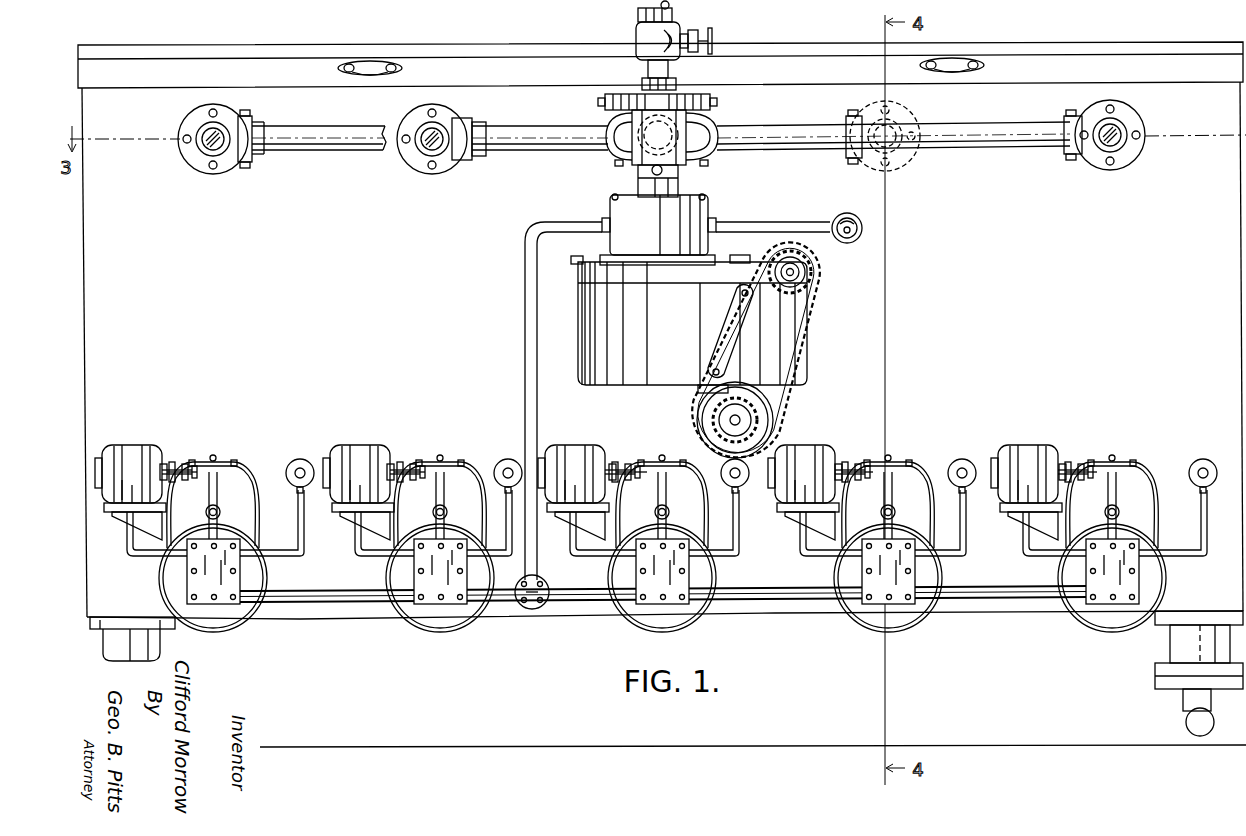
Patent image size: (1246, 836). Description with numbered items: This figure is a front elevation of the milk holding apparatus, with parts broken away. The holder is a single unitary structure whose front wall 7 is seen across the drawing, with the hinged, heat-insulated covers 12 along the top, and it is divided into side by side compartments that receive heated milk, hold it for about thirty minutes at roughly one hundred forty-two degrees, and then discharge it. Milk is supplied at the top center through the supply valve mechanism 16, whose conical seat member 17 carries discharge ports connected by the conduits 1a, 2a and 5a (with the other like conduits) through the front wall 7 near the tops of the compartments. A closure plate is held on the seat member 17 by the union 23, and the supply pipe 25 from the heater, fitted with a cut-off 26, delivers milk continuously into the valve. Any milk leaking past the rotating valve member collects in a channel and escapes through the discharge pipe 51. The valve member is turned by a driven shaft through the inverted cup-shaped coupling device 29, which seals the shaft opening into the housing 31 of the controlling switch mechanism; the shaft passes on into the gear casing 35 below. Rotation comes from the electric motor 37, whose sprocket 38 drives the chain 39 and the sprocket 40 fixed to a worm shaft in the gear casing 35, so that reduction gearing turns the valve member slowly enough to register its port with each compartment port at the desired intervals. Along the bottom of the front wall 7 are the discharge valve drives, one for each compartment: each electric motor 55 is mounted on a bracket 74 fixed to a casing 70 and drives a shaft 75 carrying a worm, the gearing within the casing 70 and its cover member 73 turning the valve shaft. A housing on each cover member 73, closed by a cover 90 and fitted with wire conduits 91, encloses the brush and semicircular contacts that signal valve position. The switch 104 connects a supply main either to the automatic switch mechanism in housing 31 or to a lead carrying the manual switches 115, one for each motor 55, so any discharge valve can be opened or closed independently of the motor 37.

The conduit 1a is at (290, 150).
The conduit 2a is at (497, 126).
The conduit 5a is at (968, 143).
The front wall 7 is at (766, 610).
The cover 12 is at (783, 78).
The valve mechanism 16 is at (618, 153).
The seat member 17 is at (700, 158).
The union 23 is at (605, 100).
The supply pipe 25 is at (636, 10).
The cut-off 26 is at (690, 32).
The coupling device 29 is at (647, 190).
The housing 31 is at (658, 230).
The gear casing 35 is at (660, 380).
The electric motor 37 is at (700, 412).
The sprocket 38 is at (730, 425).
The chain 39 is at (800, 335).
The sprocket 40 is at (806, 272).
The discharge pipe 51 is at (648, 172).
The electric motor 55 is at (145, 452).
The casing 70 is at (662, 550).
The cover member 73 is at (242, 490).
The bracket 74 is at (797, 506).
The shaft 75 is at (182, 470).
The cover 90 is at (193, 578).
The wire conduits 91 is at (151, 556).
The switch 104 is at (858, 222).
The switch 115 is at (300, 459).